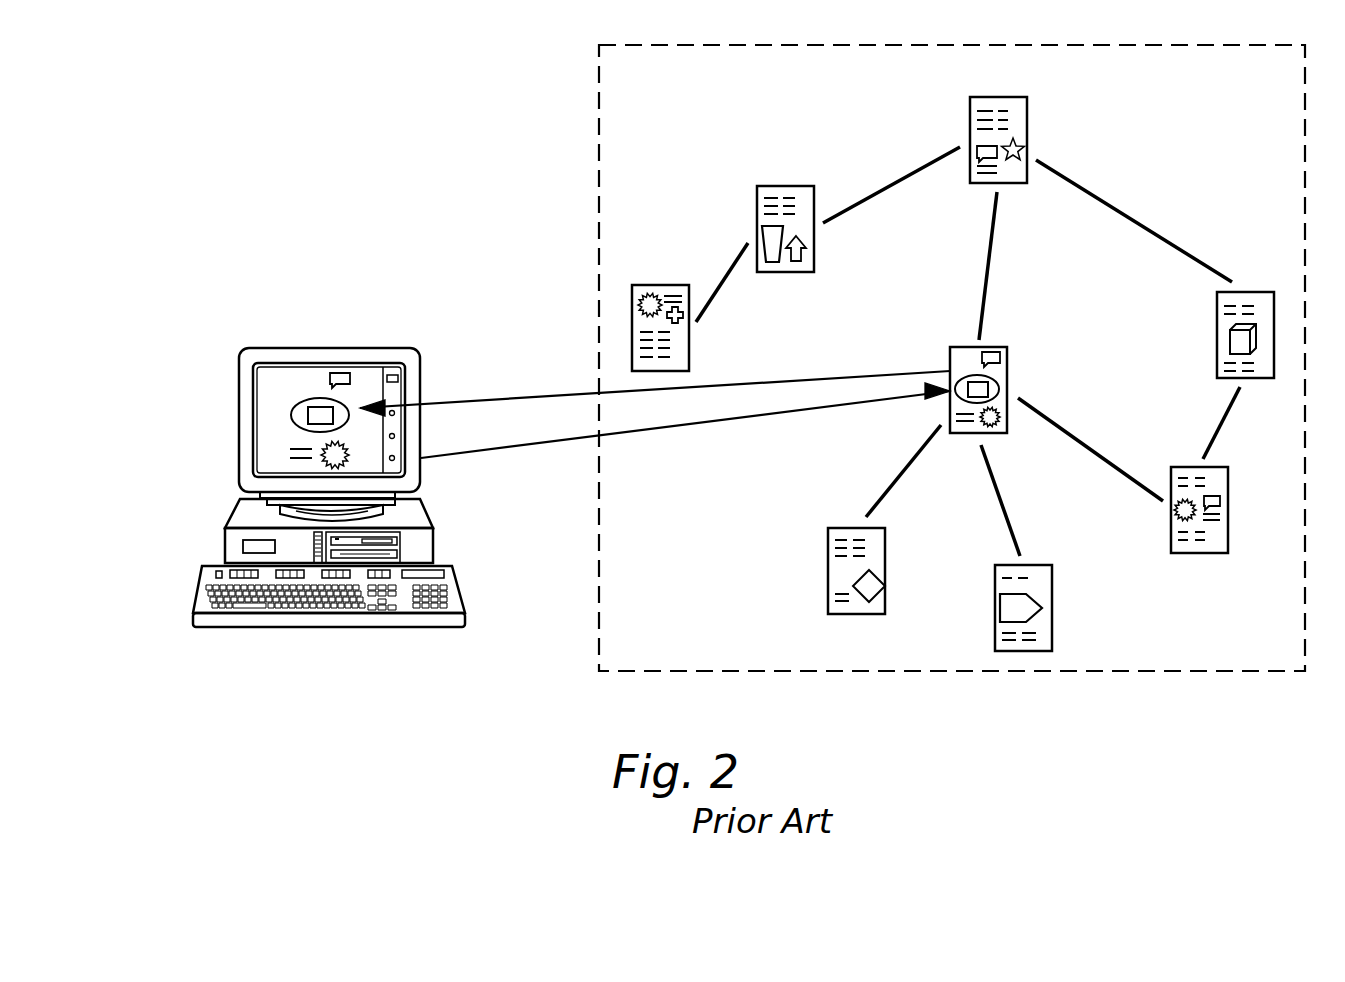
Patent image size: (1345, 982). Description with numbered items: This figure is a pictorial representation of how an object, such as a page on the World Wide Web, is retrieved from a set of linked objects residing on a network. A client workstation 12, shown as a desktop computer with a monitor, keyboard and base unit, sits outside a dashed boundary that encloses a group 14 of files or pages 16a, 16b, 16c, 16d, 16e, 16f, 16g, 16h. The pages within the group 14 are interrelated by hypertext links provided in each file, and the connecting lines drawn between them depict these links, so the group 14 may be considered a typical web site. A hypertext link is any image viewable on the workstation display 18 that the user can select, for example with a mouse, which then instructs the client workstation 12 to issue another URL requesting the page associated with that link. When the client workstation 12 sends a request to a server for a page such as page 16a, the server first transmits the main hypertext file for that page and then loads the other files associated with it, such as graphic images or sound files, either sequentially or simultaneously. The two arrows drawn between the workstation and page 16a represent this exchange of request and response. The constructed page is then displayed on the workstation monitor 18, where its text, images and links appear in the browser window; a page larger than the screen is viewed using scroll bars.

The client workstation 12 is at (238, 412).
The group of files or pages 14 is at (598, 192).
The page 16a is at (1008, 370).
The page 16b is at (1028, 134).
The page 16c is at (757, 212).
The page 16d is at (632, 335).
The page 16e is at (1250, 292).
The page 16f is at (828, 565).
The page 16g is at (995, 614).
The page 16h is at (1200, 553).
The display 18 is at (291, 374).